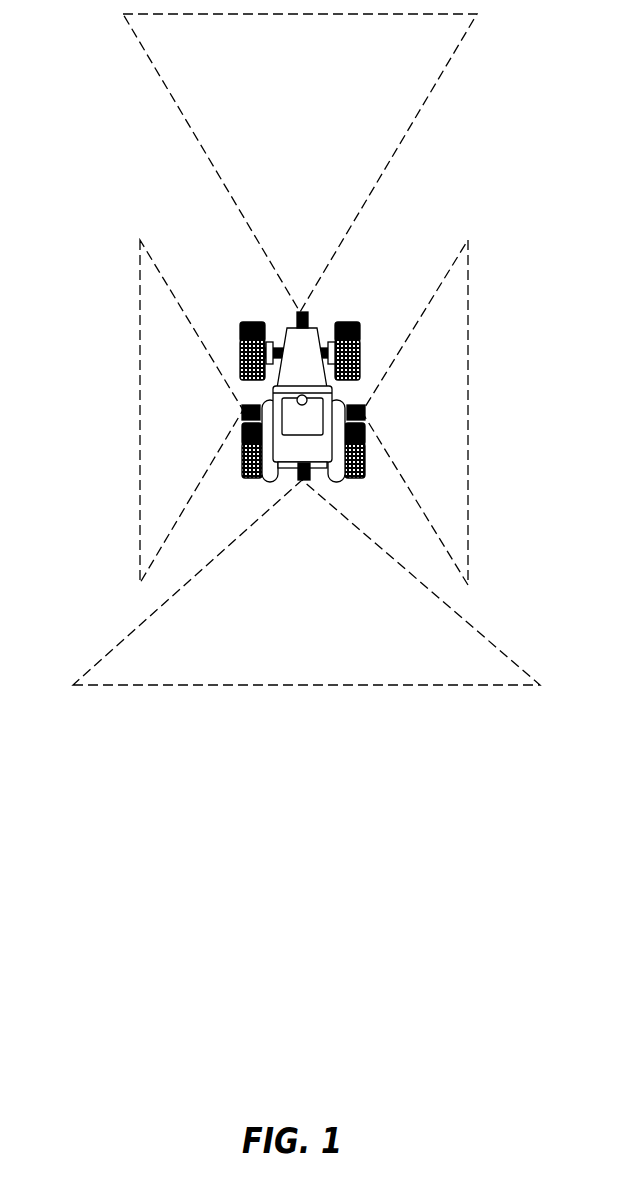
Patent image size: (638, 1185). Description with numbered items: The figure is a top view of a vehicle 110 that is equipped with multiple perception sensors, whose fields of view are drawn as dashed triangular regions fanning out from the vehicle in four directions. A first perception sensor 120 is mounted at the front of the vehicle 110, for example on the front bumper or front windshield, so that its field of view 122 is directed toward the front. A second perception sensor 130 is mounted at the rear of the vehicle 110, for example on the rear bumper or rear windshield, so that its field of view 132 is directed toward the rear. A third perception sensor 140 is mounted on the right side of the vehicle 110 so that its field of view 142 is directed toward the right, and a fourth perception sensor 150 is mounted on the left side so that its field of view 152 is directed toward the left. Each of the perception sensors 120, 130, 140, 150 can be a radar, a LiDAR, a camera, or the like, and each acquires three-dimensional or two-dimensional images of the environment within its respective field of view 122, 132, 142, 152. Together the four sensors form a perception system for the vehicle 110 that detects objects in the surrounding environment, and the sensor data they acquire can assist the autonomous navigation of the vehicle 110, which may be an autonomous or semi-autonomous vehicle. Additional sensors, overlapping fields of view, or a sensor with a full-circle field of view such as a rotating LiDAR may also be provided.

The vehicle 110 is at (297, 354).
The first perception sensor 120 is at (297, 312).
The field of view of the first perception sensor 122 is at (385, 127).
The second perception sensor 130 is at (297, 468).
The field of view of the second perception sensor 132 is at (375, 672).
The third perception sensor 140 is at (365, 412).
The field of view of the third perception sensor 142 is at (435, 363).
The fourth perception sensor 150 is at (242, 407).
The field of view of the fourth perception sensor 152 is at (157, 498).